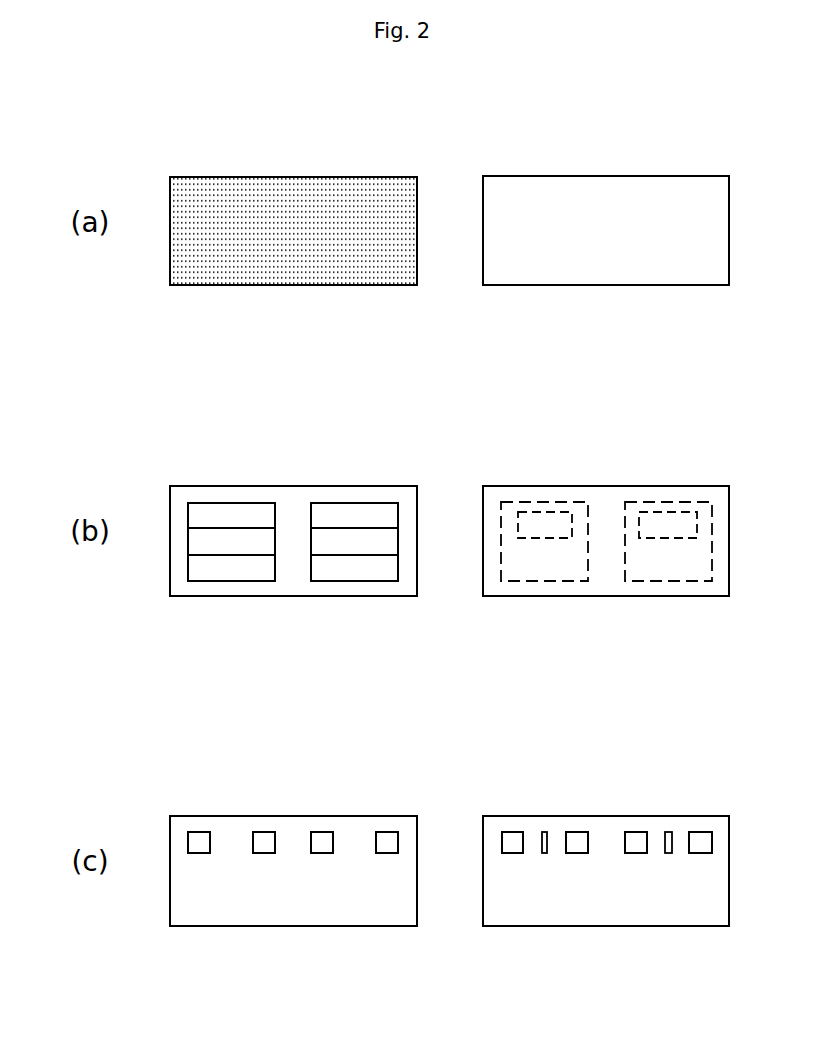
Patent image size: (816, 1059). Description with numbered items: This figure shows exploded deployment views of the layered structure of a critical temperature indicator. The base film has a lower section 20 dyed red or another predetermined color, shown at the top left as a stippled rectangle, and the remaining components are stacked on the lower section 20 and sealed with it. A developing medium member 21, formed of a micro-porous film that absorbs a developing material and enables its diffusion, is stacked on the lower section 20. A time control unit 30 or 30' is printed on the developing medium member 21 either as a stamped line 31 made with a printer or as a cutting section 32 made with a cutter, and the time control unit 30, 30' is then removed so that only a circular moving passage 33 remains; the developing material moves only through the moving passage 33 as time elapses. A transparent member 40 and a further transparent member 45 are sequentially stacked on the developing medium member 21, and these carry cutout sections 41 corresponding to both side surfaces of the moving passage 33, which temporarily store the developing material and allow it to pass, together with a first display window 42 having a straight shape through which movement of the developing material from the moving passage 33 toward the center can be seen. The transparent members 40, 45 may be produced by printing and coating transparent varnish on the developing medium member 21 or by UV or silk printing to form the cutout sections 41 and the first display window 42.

The lower section 20 is at (347, 177).
The developing medium member 21 is at (655, 182).
The time control unit 30 is at (293, 507).
The stamped line 31 is at (218, 500).
The time control unit 30' is at (606, 507).
The cutting section 32 is at (517, 500).
The moving passage 33 is at (556, 512).
The transparent member 40 is at (296, 824).
The cutout sections 41 is at (265, 832).
The first display window 42 is at (544, 832).
The transparent member 45 is at (610, 825).